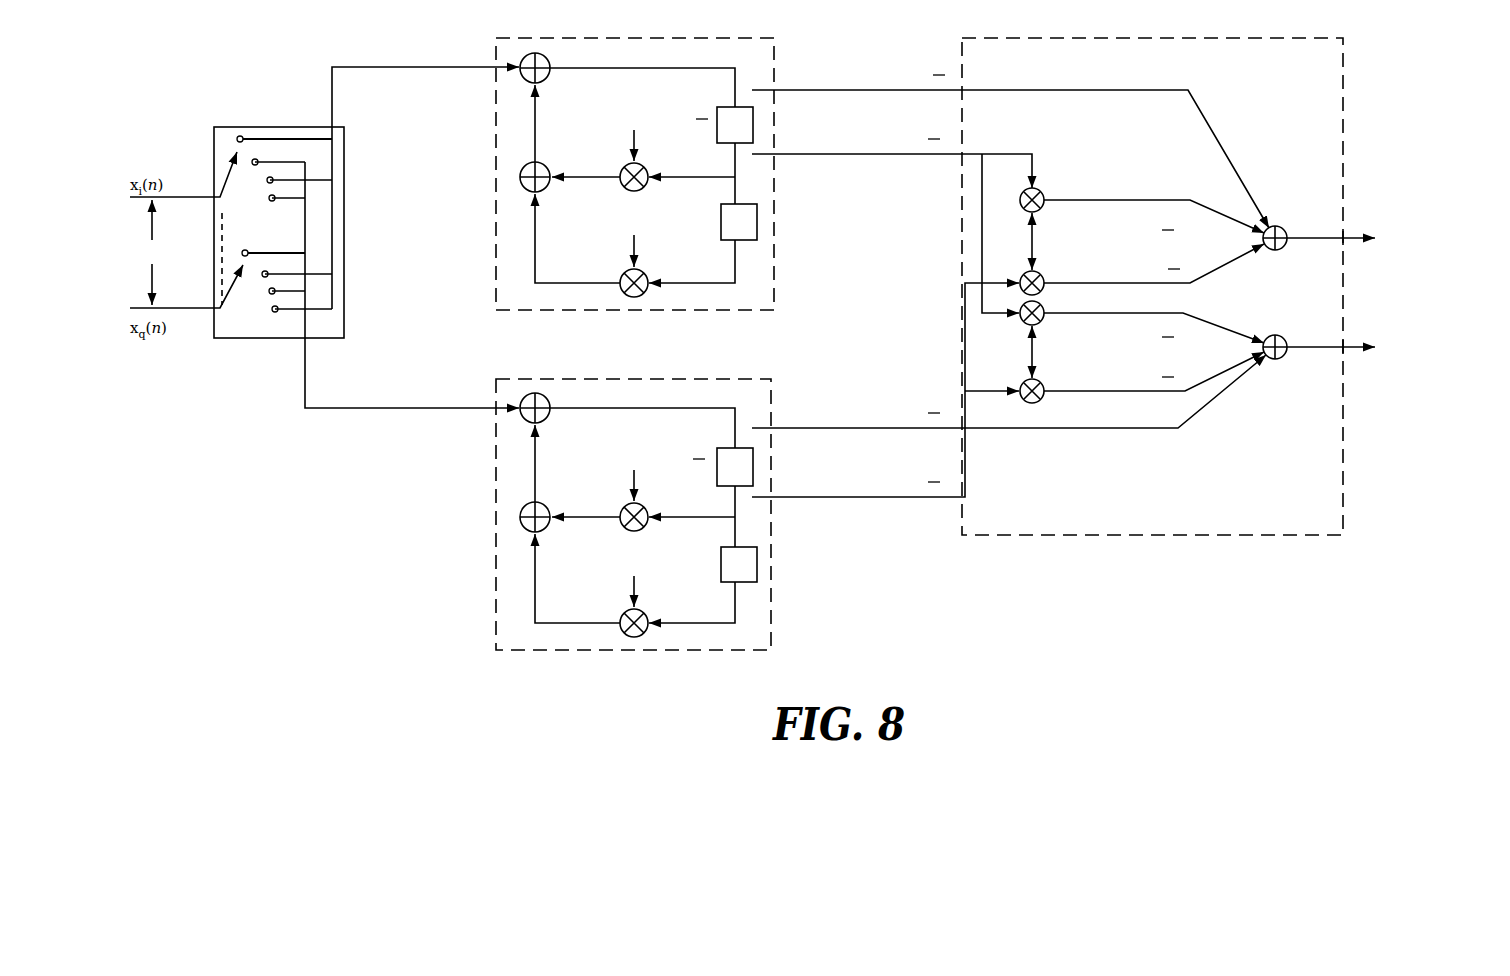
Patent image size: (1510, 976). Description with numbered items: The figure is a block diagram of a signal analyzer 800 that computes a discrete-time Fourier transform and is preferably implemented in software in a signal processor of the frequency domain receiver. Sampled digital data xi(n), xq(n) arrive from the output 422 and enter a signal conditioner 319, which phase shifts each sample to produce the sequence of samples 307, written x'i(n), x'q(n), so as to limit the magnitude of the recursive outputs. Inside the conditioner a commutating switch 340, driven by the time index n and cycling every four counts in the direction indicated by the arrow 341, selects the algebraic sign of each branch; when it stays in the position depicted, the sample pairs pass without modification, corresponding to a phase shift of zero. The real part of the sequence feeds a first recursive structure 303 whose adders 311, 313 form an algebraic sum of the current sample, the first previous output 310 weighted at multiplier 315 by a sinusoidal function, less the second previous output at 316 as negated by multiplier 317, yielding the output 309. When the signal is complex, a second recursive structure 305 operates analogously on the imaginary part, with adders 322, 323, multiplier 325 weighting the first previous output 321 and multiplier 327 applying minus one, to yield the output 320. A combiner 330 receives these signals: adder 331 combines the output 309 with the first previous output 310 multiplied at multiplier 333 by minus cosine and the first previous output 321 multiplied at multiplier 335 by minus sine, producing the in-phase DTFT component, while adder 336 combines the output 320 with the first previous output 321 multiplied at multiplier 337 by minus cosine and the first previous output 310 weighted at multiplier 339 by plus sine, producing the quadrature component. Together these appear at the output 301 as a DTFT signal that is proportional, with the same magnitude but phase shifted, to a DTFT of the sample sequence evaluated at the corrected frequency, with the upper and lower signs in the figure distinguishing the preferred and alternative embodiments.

The output 301 is at (1361, 234).
The first recursive structure 303 is at (690, 38).
The second recursive structure 305 is at (690, 379).
The sequence of samples 307 is at (428, 108).
The output 309 is at (863, 57).
The first previous output 310 is at (868, 130).
The adder 311 is at (545, 55).
The adder 313 is at (520, 177).
The multiplier 315 is at (625, 190).
The second previous output 316 is at (736, 258).
The multiplier 317 is at (648, 279).
The signal conditioner 319 is at (263, 127).
The output 320 is at (836, 398).
The first previous output 321 is at (828, 473).
The adder 322 is at (545, 395).
The adder 323 is at (520, 517).
The multiplier 325 is at (645, 527).
The multiplier 327 is at (622, 621).
The combiner 330 is at (1115, 38).
The adder 331 is at (1282, 227).
The multiplier 333 is at (1124, 206).
The multiplier 335 is at (1124, 268).
The adder 336 is at (1284, 337).
The multiplier 337 is at (1124, 377).
The multiplier 339 is at (1122, 326).
The commutating switch 340 is at (222, 190).
The arrow 341 is at (222, 227).
The output 422 is at (152, 252).
The signal analyzer 800 is at (905, 618).